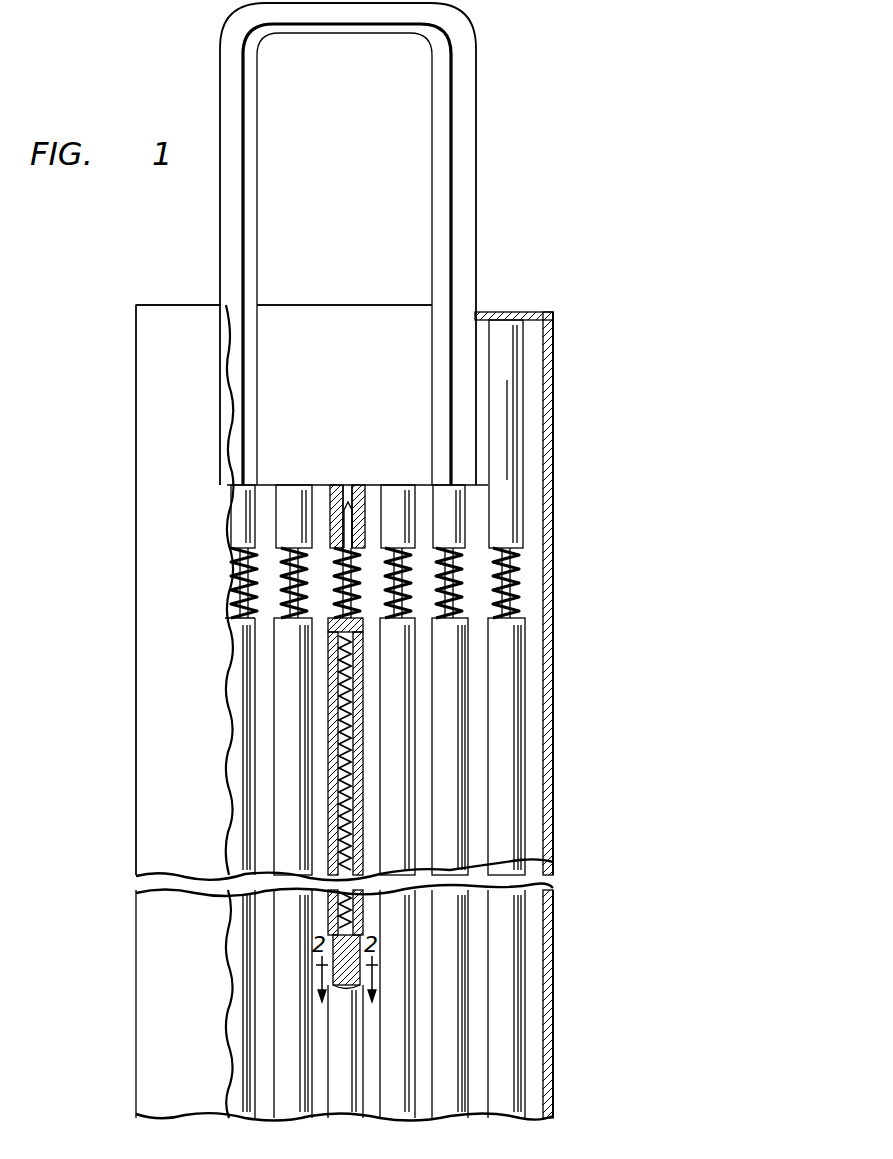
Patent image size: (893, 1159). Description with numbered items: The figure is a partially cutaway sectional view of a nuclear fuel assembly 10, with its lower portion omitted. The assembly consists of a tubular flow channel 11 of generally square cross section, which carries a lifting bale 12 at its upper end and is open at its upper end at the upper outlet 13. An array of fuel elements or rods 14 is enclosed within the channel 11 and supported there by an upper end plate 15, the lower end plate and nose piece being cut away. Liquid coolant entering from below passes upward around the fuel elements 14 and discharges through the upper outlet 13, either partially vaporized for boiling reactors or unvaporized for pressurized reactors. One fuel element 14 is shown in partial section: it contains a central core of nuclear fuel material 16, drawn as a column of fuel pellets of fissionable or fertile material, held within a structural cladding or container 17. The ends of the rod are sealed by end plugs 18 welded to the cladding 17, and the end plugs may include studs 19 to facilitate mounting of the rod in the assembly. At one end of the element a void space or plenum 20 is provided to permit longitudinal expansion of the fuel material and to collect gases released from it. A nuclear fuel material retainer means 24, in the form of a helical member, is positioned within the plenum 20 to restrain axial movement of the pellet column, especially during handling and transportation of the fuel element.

The nuclear fuel assembly 10 is at (494, 208).
The tubular flow channel 11 is at (553, 683).
The lifting bale 12 is at (476, 50).
The upper outlet 13 is at (319, 305).
The fuel element 14 is at (276, 733).
The upper end plate 15 is at (467, 521).
The nuclear fuel material 16 is at (332, 935).
The cladding 17 is at (330, 775).
The end plug 18 is at (363, 620).
The stud 19 is at (510, 594).
The plenum 20 is at (336, 806).
The nuclear fuel material retainer means 24 is at (336, 697).